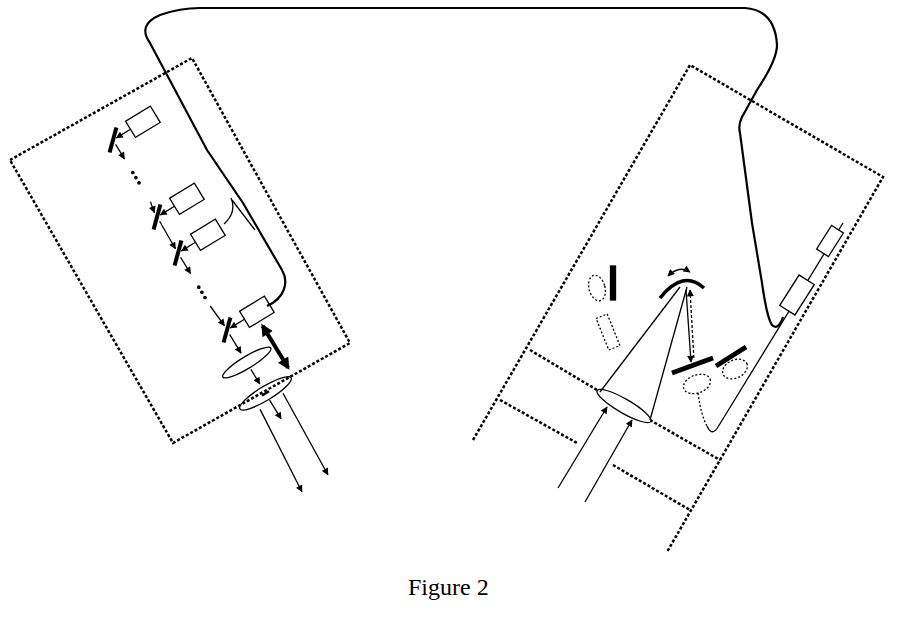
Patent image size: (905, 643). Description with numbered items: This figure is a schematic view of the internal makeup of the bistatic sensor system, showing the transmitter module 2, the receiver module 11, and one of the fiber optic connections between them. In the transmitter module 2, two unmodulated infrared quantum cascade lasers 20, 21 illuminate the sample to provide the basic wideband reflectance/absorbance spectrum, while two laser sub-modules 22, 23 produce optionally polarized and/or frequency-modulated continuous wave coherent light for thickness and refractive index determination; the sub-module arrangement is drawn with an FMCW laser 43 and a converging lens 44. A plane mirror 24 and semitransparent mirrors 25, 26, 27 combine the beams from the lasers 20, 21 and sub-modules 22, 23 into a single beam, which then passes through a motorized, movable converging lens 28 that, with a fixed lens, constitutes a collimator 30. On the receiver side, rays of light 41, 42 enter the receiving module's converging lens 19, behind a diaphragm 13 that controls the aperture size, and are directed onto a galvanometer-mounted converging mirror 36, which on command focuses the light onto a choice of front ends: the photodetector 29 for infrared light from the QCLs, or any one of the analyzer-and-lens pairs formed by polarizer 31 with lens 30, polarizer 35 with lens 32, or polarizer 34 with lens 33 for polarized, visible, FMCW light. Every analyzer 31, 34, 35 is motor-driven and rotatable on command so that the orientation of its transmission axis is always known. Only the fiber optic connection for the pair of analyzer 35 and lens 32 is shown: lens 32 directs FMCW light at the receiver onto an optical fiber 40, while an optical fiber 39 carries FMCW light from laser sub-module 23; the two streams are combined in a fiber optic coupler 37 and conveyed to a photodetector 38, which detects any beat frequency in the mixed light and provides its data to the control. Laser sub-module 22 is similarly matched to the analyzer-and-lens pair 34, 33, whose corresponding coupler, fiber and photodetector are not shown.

The transmitter module 2 is at (283, 211).
The receiver module 11 is at (582, 250).
The diaphragm 13 is at (535, 422).
The converging lens 19 is at (624, 405).
The quantum cascade laser 20 is at (143, 121).
The quantum cascade laser 21 is at (187, 198).
The laser sub-module 22 is at (223, 224).
The laser sub-module 23 is at (257, 311).
The mirror 24 is at (109, 149).
The semitransparent mirror 25 is at (149, 219).
The semitransparent mirror 26 is at (170, 257).
The semitransparent mirror 27 is at (217, 336).
The converging lens on motorized mount 28 is at (247, 362).
The photodetector for QCL infrared laser light 29 is at (599, 340).
The converging lens 30 is at (213, 377).
The polarizer used as an analyzer 31 is at (617, 272).
The converging lens 32 is at (734, 368).
The converging lens 33 is at (697, 384).
The polarizer used as an analyzer 34 is at (733, 351).
The polarizer used as an analyzer 35 is at (684, 370).
The galvanometer-mounted converging mirror 36 is at (673, 283).
The fiber optic coupler 37 is at (797, 295).
The photodetector 38 is at (830, 240).
The optical fiber linking transmitter and receiver modules 39 is at (464, 167).
The optical fiber 40 is at (770, 327).
The ray of light entering receiver 41 is at (575, 447).
The ray of light entering receiver 42 is at (601, 461).
The frequency modulated continuous wave laser 43 is at (128, 137).
The converging lens 44 is at (136, 178).